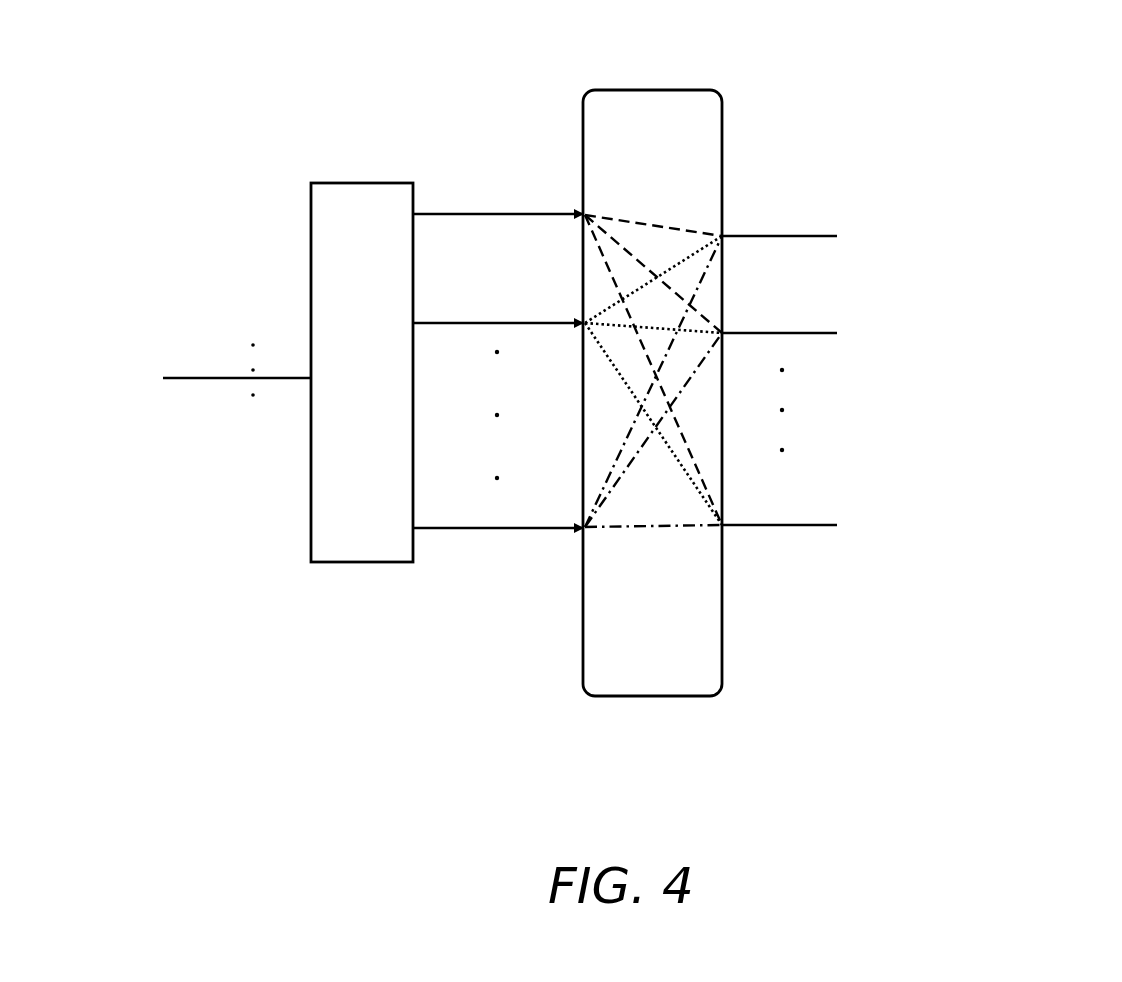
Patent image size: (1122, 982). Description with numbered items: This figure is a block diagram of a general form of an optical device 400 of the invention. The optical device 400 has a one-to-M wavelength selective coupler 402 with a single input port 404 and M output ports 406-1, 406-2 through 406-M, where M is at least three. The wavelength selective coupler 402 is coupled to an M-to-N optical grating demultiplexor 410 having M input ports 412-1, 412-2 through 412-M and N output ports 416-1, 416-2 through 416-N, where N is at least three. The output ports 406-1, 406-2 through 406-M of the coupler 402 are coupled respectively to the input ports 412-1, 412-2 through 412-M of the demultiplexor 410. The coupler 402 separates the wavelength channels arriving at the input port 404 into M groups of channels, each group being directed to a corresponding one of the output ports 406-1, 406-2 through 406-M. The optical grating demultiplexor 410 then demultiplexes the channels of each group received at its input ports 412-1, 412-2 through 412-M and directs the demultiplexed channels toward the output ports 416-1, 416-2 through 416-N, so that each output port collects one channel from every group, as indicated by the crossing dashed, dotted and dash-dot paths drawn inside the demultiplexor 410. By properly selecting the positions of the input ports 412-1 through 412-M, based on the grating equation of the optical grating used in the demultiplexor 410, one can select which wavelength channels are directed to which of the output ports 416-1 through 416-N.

The optical device 400 is at (1012, 61).
The 1:M wavelength selective coupler 402 is at (382, 499).
The input port 404 is at (163, 378).
The output port 406-1 is at (425, 212).
The output port 406-2 is at (425, 321).
The output port 406-M is at (425, 530).
The M:N optical grating demultiplexor 410 is at (672, 637).
The input port 412-1 is at (573, 212).
The input port 412-2 is at (573, 321).
The input port 412-M is at (560, 530).
The output port 416-1 is at (828, 238).
The output port 416-2 is at (828, 335).
The output port 416-N is at (830, 527).